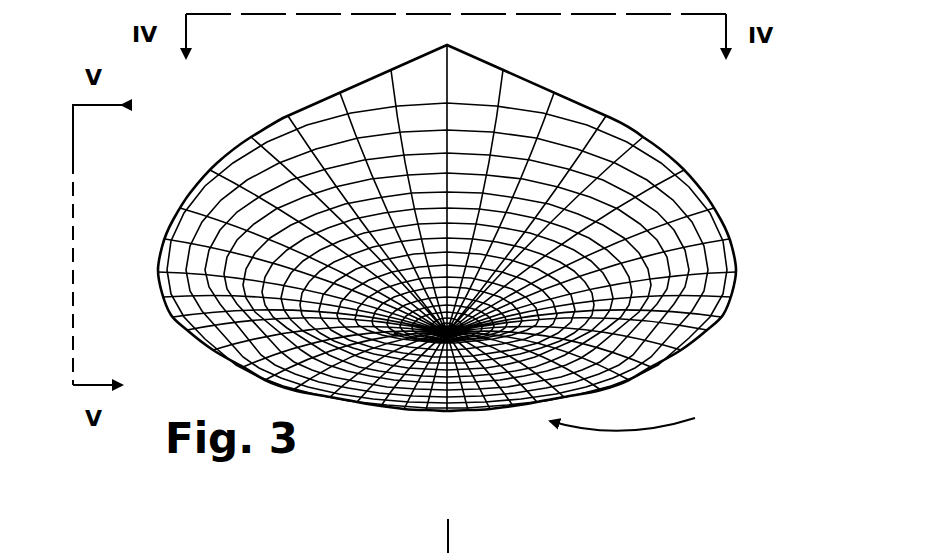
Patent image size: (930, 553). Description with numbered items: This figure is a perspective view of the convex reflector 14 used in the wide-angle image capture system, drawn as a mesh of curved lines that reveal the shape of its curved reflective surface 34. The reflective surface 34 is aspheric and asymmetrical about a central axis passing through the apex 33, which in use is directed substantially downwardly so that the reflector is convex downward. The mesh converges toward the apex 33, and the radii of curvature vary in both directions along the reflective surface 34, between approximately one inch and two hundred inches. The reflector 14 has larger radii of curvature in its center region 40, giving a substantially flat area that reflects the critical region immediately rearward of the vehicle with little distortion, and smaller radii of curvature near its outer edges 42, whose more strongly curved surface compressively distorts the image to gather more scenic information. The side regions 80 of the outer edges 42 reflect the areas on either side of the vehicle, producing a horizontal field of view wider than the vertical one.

The convex reflector 14 is at (670, 99).
The outer edges 42 is at (361, 98).
The side regions 80 is at (715, 294).
The apex 33 is at (447, 336).
The center region 40 is at (396, 335).
The reflective surface 34 is at (640, 415).